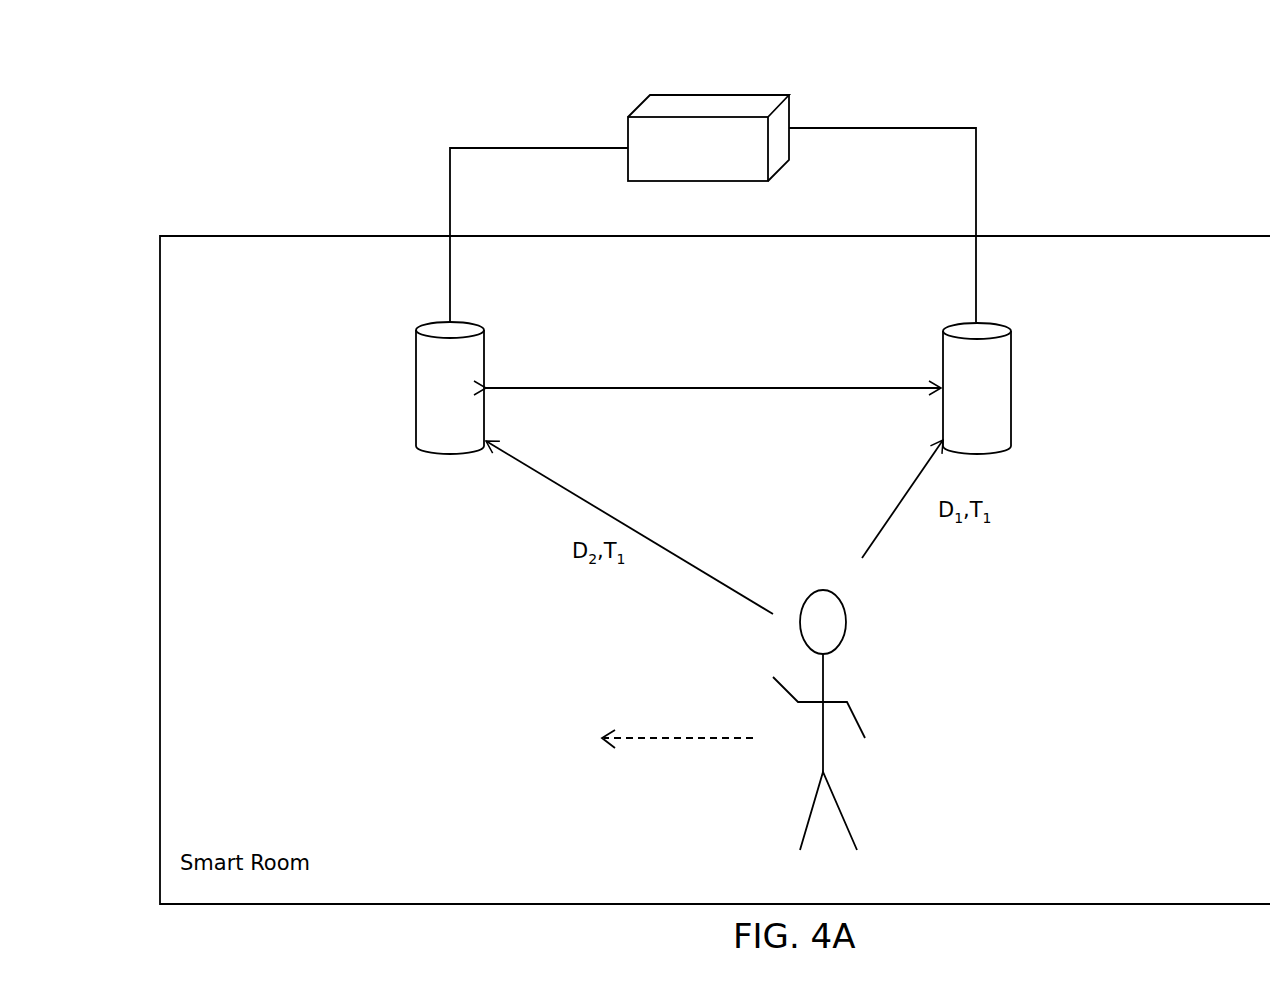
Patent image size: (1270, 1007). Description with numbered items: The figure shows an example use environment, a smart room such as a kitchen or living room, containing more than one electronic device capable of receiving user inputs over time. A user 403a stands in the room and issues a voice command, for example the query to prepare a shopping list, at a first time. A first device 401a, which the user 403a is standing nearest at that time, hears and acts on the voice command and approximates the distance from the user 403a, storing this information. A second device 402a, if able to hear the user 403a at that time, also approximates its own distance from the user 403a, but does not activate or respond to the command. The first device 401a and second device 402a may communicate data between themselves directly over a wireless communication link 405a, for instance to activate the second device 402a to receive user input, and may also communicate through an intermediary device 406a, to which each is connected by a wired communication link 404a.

The first device 401a is at (1012, 361).
The second device 402a is at (415, 387).
The user 403a is at (865, 642).
The wired communication link 404a is at (571, 148).
The wireless communication link 405a is at (753, 388).
The intermediary device 406a is at (734, 108).